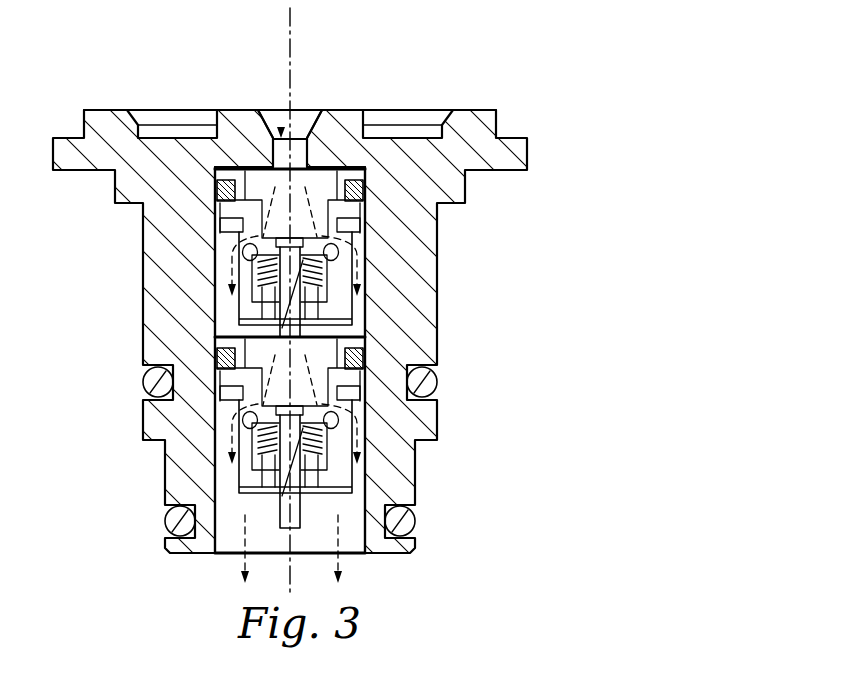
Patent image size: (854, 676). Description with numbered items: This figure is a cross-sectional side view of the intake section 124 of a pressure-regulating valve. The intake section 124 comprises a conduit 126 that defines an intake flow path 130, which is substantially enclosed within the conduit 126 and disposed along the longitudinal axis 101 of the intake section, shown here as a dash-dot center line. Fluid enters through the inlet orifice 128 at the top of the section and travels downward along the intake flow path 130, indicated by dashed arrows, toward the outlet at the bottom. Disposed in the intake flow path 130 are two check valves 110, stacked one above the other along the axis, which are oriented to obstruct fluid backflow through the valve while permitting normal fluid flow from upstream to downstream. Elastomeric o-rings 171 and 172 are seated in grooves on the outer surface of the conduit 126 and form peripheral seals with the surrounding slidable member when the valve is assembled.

The intake section 124 is at (290, 305).
The longitudinal axis 101 is at (287, 28).
The intake flow path 130 is at (280, 128).
The inlet orifice 128 is at (310, 112).
The check valves 110 is at (343, 427).
The elastomeric o-ring 171 is at (428, 382).
The elastomeric o-ring 172 is at (405, 522).
The conduit 126 is at (358, 537).